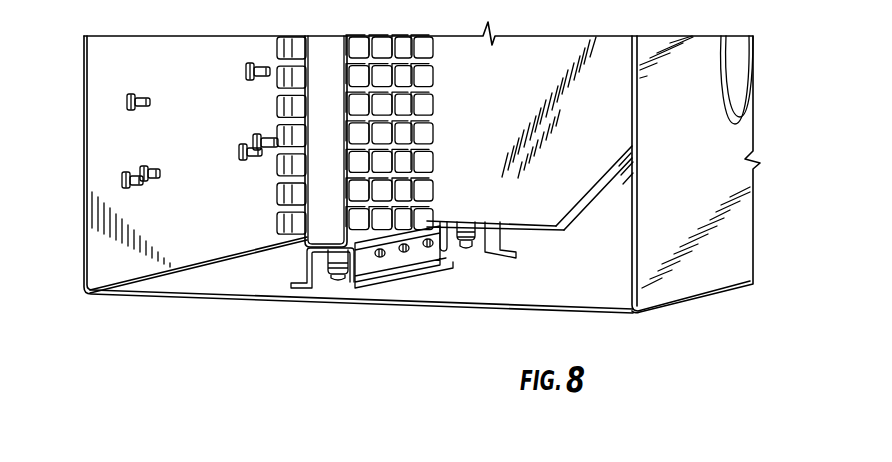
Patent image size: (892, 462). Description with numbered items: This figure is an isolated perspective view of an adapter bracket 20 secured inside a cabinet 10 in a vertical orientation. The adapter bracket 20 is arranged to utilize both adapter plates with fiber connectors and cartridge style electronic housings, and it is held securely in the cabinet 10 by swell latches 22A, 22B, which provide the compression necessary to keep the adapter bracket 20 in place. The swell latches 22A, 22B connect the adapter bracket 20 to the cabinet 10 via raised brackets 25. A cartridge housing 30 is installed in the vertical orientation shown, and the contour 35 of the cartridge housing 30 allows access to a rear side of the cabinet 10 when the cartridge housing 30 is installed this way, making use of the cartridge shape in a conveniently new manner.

The cabinet 10 is at (199, 153).
The adapter bracket 20 is at (336, 159).
The swell latch 22A is at (338, 278).
The swell latch 22B is at (463, 248).
The raised bracket 25 is at (378, 273).
The cartridge housing 30 is at (498, 153).
The contour 35 is at (601, 200).